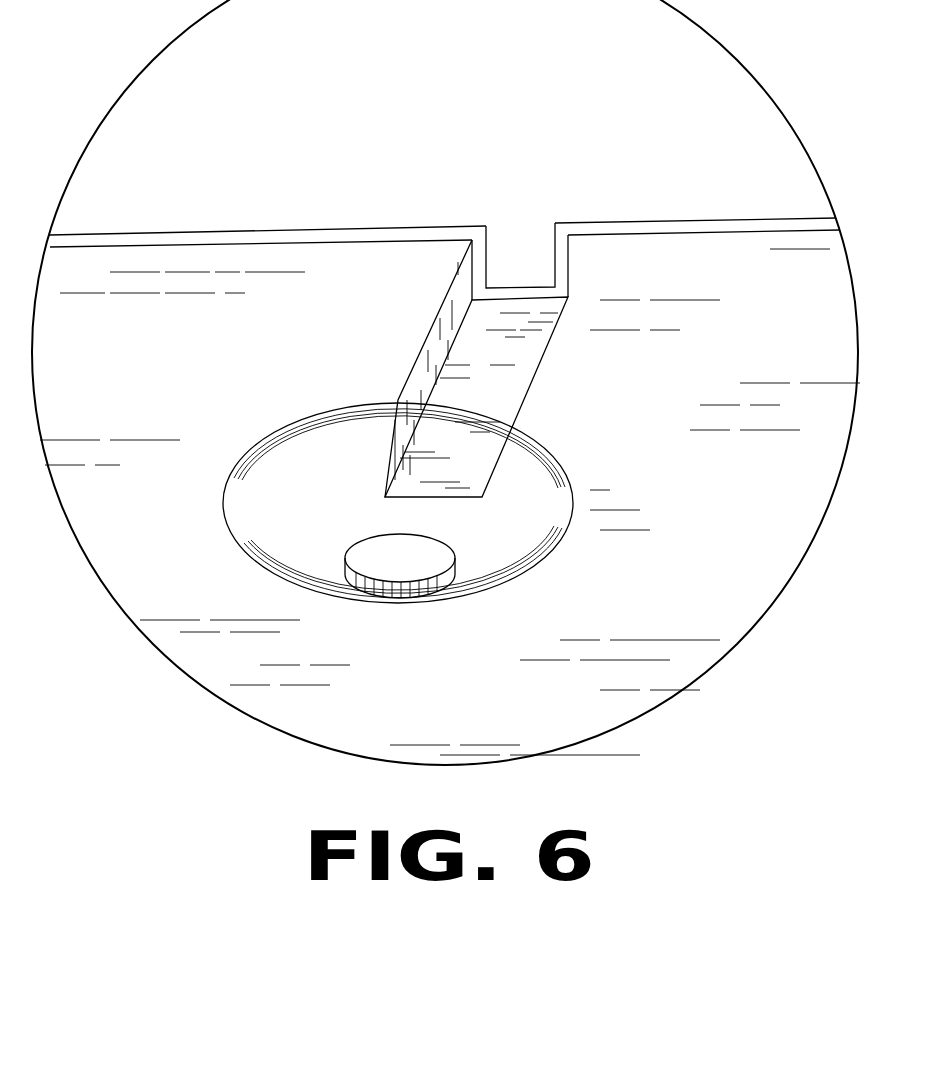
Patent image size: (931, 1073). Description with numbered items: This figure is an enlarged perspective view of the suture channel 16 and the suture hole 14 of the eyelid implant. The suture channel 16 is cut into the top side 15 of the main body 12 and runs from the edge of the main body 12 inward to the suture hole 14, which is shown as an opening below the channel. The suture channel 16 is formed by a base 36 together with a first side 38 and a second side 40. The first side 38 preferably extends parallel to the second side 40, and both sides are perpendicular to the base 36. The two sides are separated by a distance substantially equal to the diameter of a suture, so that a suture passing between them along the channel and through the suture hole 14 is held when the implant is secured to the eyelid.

The main body 12 is at (636, 222).
The suture hole 14 is at (427, 572).
The top side 15 is at (742, 280).
The suture channel 16 is at (543, 157).
The base 36 is at (484, 306).
The first side 38 is at (438, 342).
The second side 40 is at (534, 373).